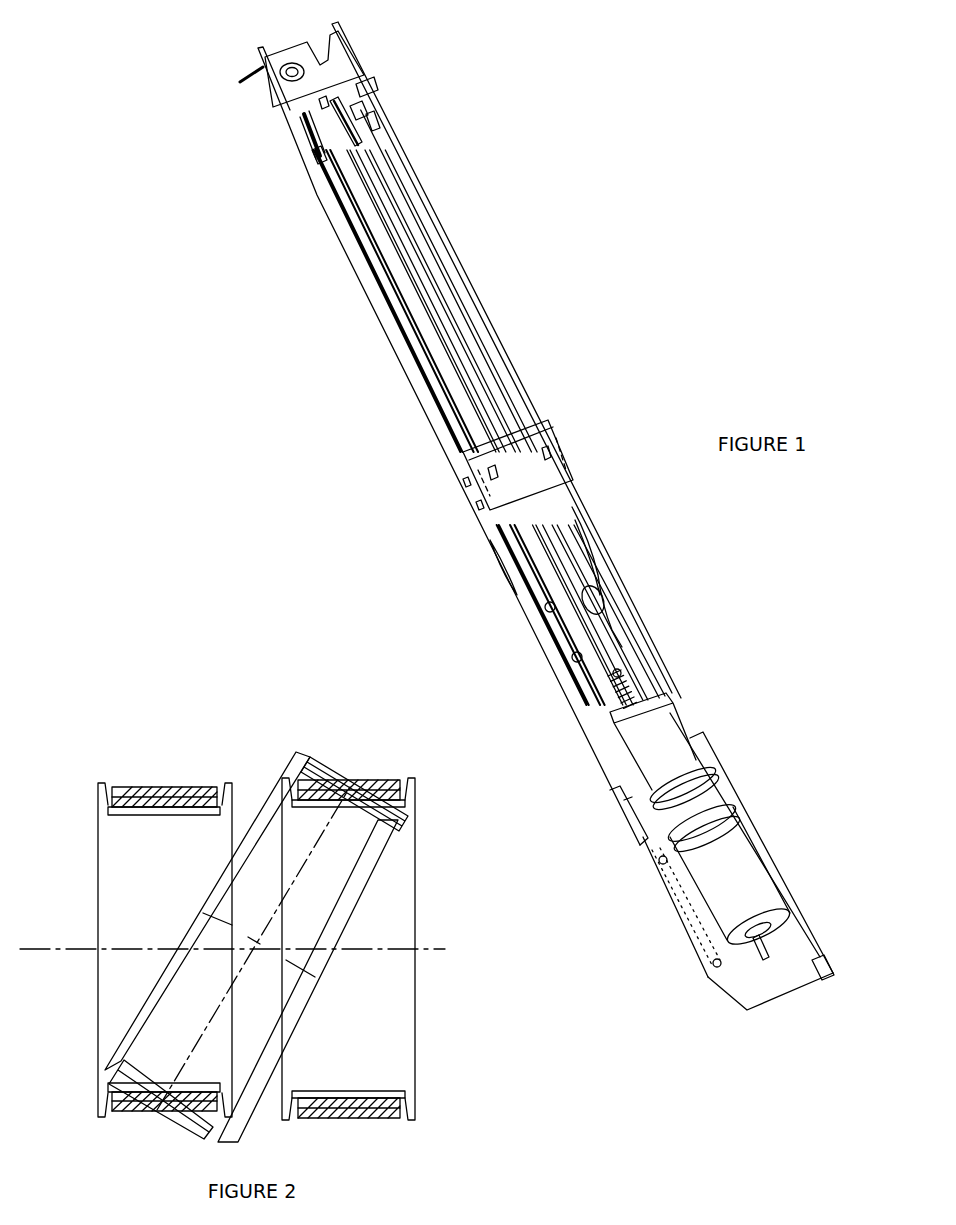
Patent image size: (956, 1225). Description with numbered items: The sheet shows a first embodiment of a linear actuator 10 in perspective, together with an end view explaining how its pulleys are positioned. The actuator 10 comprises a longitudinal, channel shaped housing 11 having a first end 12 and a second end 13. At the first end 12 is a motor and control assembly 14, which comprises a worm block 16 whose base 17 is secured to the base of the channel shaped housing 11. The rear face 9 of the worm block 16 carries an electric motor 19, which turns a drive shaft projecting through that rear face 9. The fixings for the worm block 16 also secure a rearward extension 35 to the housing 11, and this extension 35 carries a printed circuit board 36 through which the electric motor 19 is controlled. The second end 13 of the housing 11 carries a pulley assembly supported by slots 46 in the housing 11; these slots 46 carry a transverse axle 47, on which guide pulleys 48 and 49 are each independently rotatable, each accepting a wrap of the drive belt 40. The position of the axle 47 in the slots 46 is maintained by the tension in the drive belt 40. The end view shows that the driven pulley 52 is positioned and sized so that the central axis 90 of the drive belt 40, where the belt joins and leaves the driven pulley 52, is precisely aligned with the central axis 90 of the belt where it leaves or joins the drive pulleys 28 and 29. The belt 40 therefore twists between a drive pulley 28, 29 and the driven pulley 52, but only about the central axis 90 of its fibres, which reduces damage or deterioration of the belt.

In FIG. 1, the rear face 9 is at (657, 823).
In FIG. 1, the actuator 10 is at (338, 220).
In FIG. 1, the channel shaped housing 11 is at (290, 162).
In FIG. 1, the first end 12 is at (622, 820).
In FIG. 1, the second end 13 is at (338, 70).
In FIG. 1, the motor and control assembly 14 is at (723, 873).
In FIG. 1, the worm block 16 is at (680, 730).
In FIG. 1, the base 17 is at (657, 843).
In FIG. 1, the electric motor 19 is at (790, 915).
In FIG. 2, the drive pulley 28 is at (232, 783).
In FIG. 2, the drive pulley 29 is at (415, 775).
In FIG. 1, the rearward extension 35 is at (767, 1010).
In FIG. 1, the printed circuit board 36 is at (680, 930).
In FIG. 2, the drive belt 40 is at (400, 1132).
In FIG. 1, the slots 46 is at (373, 96).
In FIG. 1, the transverse axle 47 is at (352, 139).
In FIG. 1, the guide pulley 48 is at (320, 156).
In FIG. 1, the guide pulley 49 is at (360, 113).
In FIG. 2, the driven pulley 52 is at (298, 748).
In FIG. 2, the central axis 90 is at (350, 785).